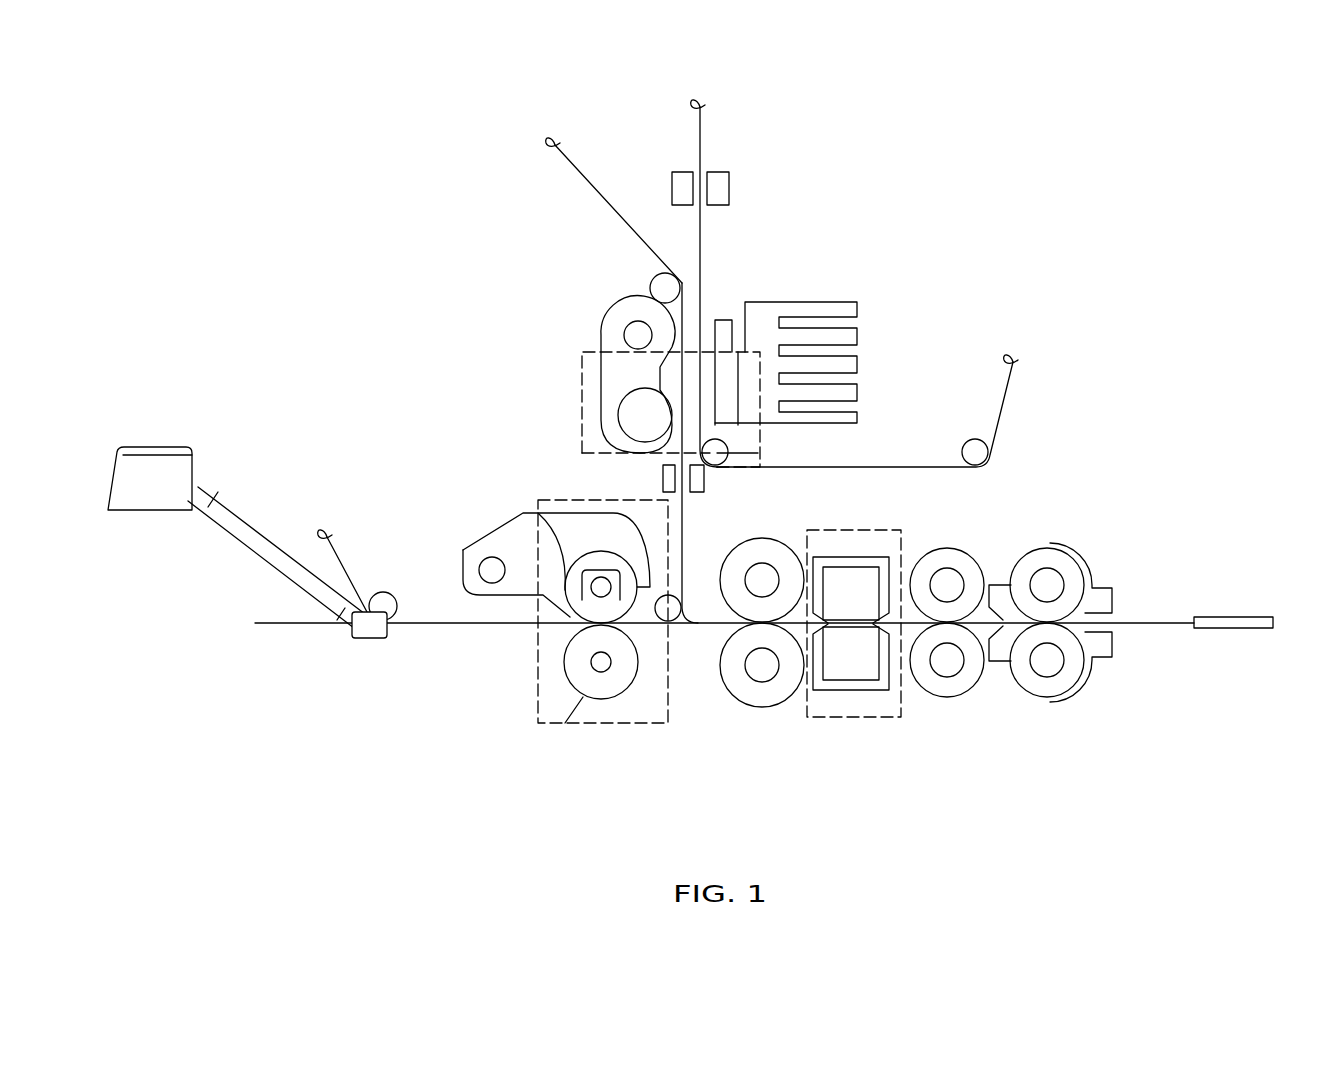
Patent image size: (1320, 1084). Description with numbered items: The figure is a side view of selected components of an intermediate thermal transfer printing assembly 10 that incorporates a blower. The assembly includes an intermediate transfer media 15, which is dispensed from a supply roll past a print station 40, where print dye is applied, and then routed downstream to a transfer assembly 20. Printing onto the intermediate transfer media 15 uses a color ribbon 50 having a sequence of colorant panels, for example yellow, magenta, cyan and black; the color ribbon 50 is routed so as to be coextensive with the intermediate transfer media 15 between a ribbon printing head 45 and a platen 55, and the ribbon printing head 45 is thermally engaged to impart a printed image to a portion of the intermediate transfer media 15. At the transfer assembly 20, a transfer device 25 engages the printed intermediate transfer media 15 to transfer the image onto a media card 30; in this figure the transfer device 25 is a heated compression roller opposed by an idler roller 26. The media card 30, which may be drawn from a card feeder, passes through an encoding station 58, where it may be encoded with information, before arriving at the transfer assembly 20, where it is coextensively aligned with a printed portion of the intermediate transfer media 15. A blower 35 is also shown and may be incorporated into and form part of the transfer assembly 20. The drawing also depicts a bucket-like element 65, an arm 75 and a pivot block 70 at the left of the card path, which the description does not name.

The intermediate thermal transfer printing assembly 10 is at (1024, 237).
The intermediate transfer media 15 is at (587, 182).
The transfer assembly 20 is at (516, 722).
The transfer device 25 is at (522, 577).
The idler roller 26 is at (603, 699).
The media card 30 is at (1235, 617).
The blower 35 is at (143, 575).
The print station 40 is at (820, 288).
The ribbon printing head 45 is at (722, 462).
The color ribbon 50 is at (898, 467).
The platen 55 is at (603, 390).
The encoding station 58 is at (858, 740).
The bucket 65 is at (173, 477).
The pivot block 70 is at (367, 638).
The arm 75 is at (243, 525).